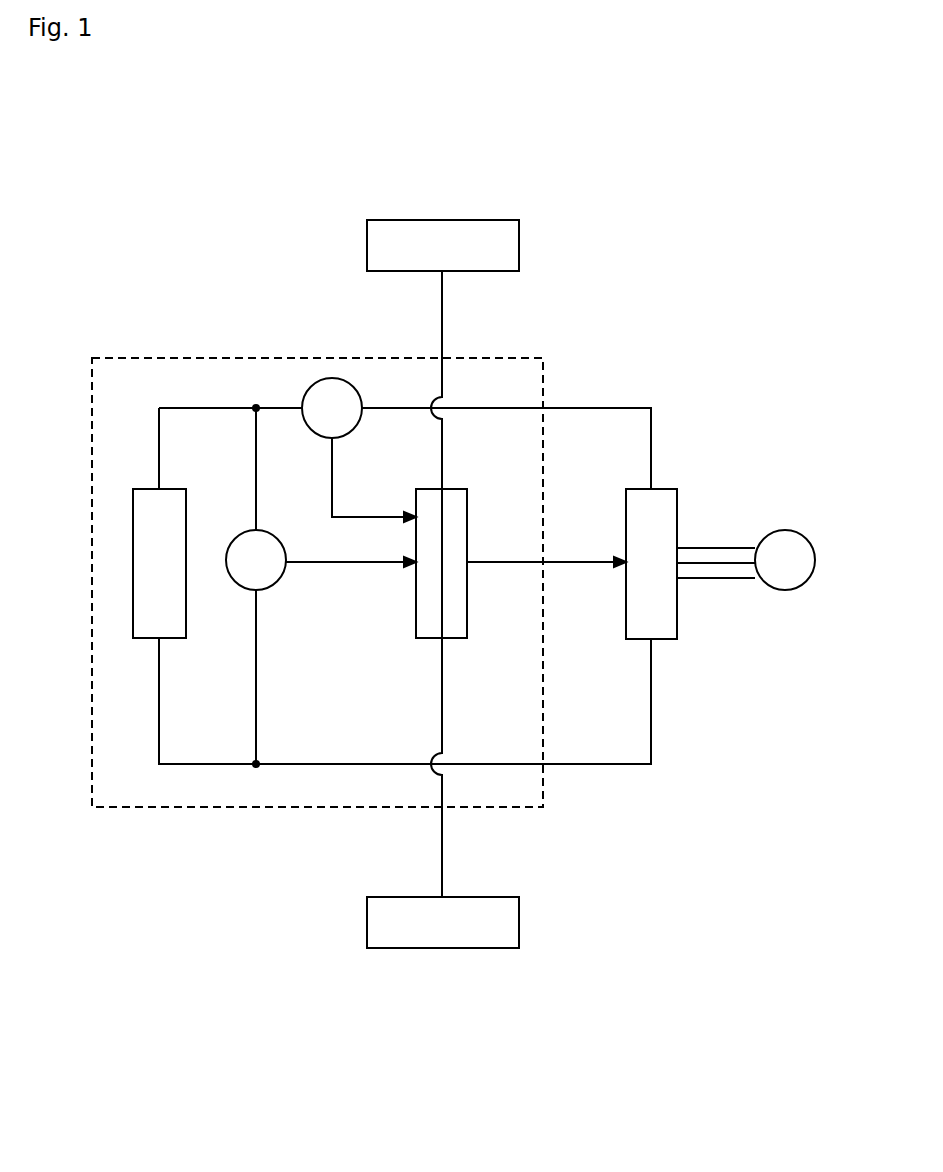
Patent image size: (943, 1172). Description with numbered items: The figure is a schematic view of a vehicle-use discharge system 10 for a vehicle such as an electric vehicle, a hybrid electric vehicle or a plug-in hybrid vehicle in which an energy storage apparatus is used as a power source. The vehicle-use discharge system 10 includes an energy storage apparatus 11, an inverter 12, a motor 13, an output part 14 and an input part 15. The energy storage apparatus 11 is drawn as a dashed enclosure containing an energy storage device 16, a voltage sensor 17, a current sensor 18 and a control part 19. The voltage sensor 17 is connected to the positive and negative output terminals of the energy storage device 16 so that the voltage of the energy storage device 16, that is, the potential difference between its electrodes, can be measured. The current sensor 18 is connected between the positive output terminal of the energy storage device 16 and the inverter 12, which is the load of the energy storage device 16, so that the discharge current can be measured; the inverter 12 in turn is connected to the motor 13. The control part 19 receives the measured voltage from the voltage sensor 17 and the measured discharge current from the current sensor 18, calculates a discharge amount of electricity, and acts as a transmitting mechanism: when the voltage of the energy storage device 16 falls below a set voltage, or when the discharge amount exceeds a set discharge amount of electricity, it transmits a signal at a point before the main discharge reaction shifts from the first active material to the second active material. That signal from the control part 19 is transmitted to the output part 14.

The vehicle-use discharge system 10 is at (657, 185).
The energy storage apparatus 11 is at (203, 357).
The inverter 12 is at (663, 505).
The motor 13 is at (790, 540).
The output part 14 is at (440, 232).
The input part 15 is at (450, 940).
The energy storage device 16 is at (160, 503).
The voltage sensor 17 is at (235, 550).
The current sensor 18 is at (318, 380).
The control part 19 is at (452, 527).